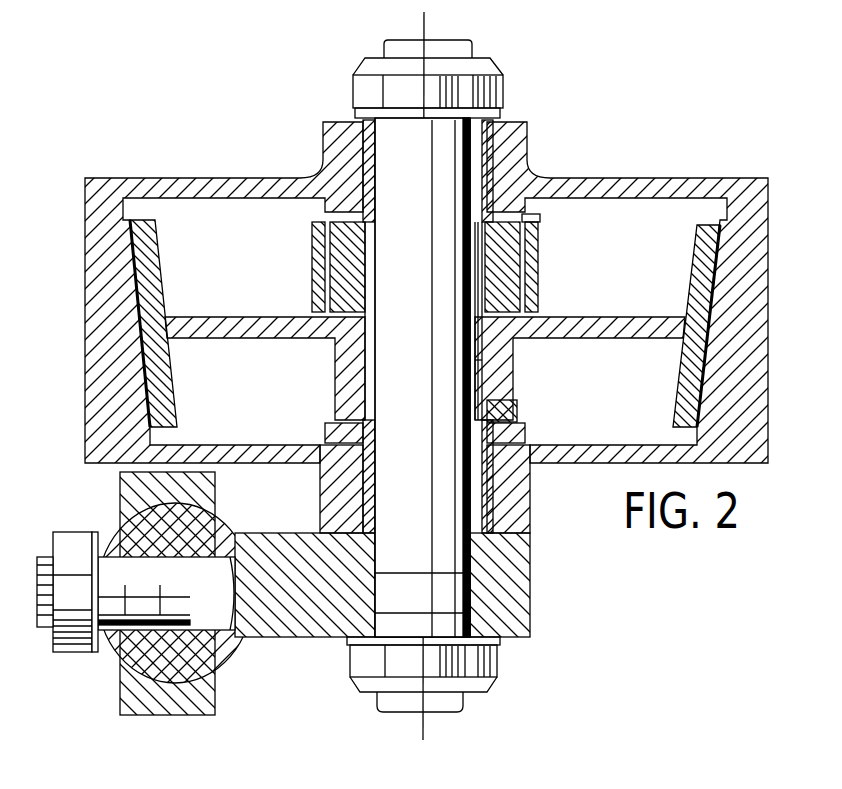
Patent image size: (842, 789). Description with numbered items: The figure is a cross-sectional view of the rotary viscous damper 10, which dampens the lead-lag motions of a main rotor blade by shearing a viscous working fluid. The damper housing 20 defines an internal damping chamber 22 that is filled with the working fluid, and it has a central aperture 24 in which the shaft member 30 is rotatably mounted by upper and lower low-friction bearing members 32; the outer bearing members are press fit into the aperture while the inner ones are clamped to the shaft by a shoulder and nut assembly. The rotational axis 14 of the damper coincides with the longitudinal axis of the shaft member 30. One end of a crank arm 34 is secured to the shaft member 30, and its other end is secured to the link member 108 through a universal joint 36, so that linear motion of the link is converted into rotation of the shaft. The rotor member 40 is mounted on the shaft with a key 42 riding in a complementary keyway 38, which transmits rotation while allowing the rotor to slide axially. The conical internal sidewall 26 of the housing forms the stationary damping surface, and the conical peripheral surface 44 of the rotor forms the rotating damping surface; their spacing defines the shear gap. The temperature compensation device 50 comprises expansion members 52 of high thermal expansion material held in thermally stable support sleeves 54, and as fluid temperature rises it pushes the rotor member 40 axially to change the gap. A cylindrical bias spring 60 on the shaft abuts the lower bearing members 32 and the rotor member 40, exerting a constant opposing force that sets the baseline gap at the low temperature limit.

The rotary viscous damper 10 is at (638, 143).
The rotational axis 14 is at (428, 62).
The damper housing 20 is at (452, 292).
The internal damping chamber 22 is at (250, 215).
The central aperture 24 is at (522, 135).
The internal sidewall 26 is at (735, 328).
The shaft member 30 is at (450, 585).
The low-friction bearing members 32 is at (365, 135).
The crank arm 34 is at (303, 622).
The universal joint 36 is at (212, 647).
The keyway 38 is at (482, 340).
The rotor member 40 is at (168, 267).
The key 42 is at (482, 385).
The peripheral surface 44 is at (720, 256).
The temperature compensation device 50 is at (313, 252).
The expansion members 52 is at (535, 272).
The support sleeves 54 is at (533, 223).
The bias spring 60 is at (528, 410).
The link member 108 is at (130, 700).